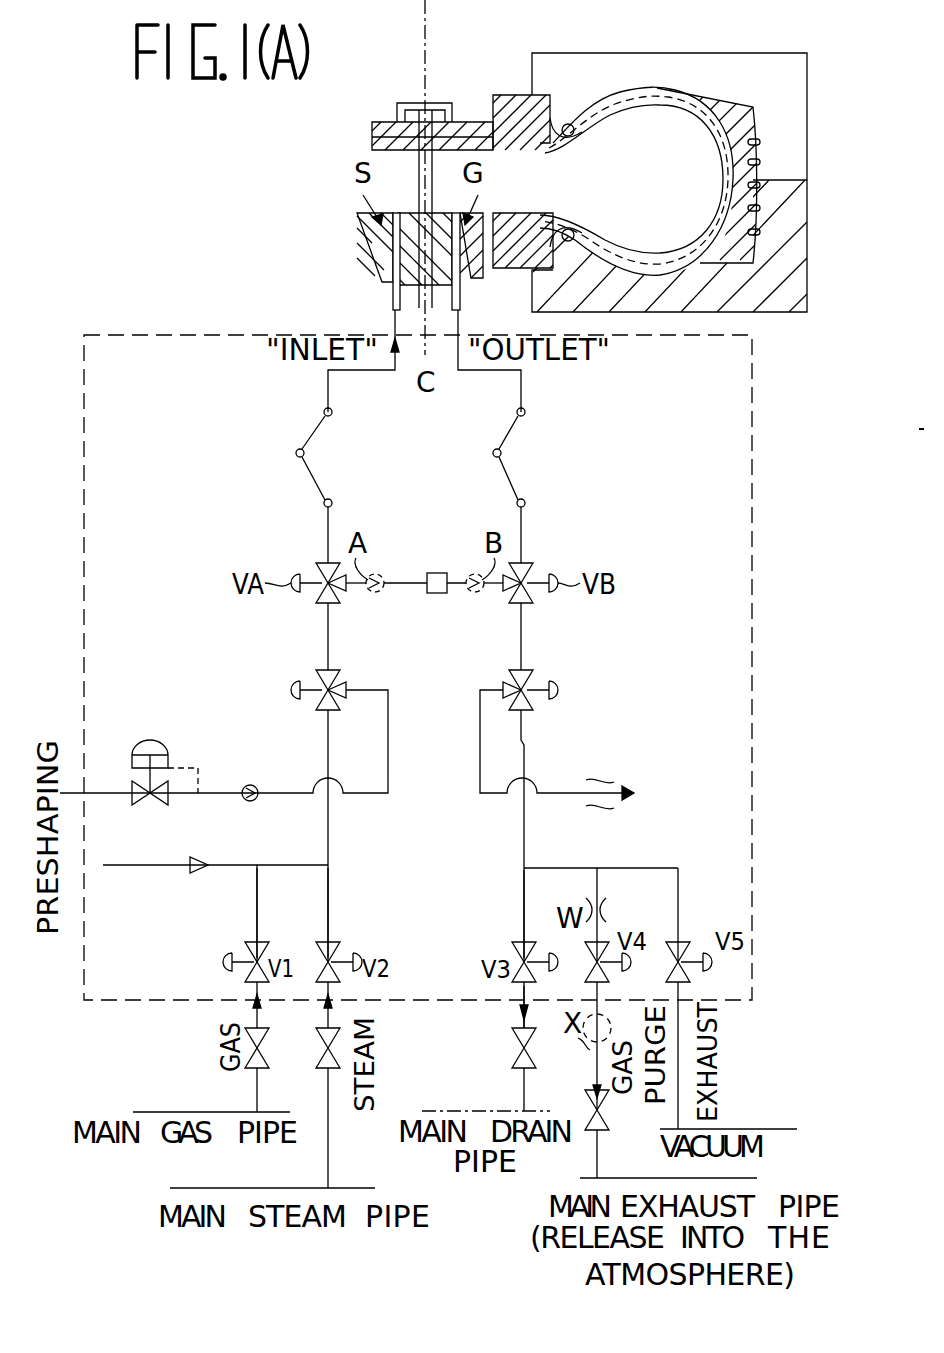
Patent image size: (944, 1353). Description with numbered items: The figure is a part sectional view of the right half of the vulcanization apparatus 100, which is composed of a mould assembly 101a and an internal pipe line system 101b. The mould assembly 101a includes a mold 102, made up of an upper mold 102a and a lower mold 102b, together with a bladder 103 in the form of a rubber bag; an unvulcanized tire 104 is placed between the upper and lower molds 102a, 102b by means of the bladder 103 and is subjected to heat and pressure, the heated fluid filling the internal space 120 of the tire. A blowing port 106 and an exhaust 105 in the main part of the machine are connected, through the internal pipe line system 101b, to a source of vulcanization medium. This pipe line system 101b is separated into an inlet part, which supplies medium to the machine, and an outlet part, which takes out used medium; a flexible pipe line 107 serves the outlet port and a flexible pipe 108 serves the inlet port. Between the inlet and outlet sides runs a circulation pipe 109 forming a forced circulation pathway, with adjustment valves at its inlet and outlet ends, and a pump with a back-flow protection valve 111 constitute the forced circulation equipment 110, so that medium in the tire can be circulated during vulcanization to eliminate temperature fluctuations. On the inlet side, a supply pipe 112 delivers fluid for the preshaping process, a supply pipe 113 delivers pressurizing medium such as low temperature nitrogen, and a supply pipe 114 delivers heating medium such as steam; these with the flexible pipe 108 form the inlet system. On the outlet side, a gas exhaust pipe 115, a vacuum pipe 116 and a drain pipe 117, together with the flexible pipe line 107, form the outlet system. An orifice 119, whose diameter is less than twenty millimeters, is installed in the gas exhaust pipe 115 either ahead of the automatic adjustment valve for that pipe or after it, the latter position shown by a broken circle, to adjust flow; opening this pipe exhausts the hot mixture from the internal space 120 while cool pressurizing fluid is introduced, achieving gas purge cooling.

The vulcanization apparatus 100 is at (483, 88).
The mould assembly 101a is at (398, 120).
The internal pipe line system 101b is at (752, 497).
The mold 102 is at (807, 180).
The upper mold 102a is at (790, 128).
The lower mold 102b is at (790, 250).
The bladder 103 is at (662, 105).
The unvulcanized tire 104 is at (738, 105).
The exhaust 105 is at (472, 262).
The blowing port 106 is at (382, 245).
The flexible pipe line 107 is at (510, 432).
The flexible pipe 108 is at (316, 432).
The circulation pipe 109 is at (450, 595).
The forced circulation equipment 110 is at (437, 572).
The back-flow protection valve 111 is at (377, 595).
The supply pipe for preshaping fluid 112 is at (293, 791).
The supply pipe for pressurizing medium 113 is at (257, 912).
The supply pipe for heating medium 114 is at (328, 912).
The gas exhaust pipe 115 is at (597, 884).
The vacuum pipe 116 is at (680, 888).
The drain pipe 117 is at (524, 900).
The orifice 119 is at (576, 888).
The internal space of the tire 120 is at (668, 262).